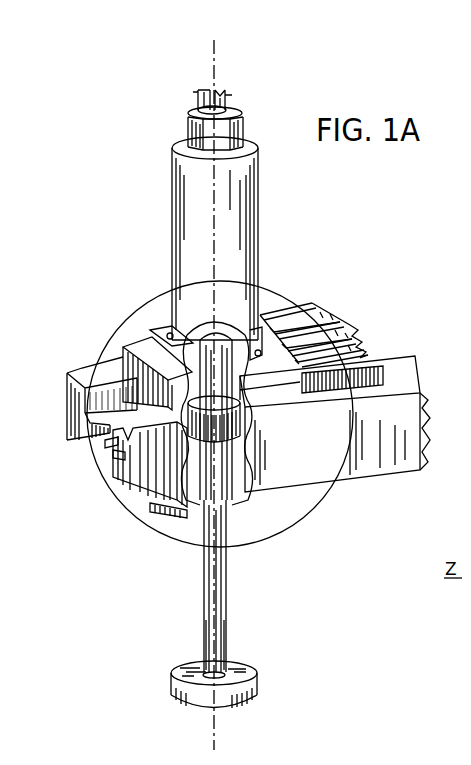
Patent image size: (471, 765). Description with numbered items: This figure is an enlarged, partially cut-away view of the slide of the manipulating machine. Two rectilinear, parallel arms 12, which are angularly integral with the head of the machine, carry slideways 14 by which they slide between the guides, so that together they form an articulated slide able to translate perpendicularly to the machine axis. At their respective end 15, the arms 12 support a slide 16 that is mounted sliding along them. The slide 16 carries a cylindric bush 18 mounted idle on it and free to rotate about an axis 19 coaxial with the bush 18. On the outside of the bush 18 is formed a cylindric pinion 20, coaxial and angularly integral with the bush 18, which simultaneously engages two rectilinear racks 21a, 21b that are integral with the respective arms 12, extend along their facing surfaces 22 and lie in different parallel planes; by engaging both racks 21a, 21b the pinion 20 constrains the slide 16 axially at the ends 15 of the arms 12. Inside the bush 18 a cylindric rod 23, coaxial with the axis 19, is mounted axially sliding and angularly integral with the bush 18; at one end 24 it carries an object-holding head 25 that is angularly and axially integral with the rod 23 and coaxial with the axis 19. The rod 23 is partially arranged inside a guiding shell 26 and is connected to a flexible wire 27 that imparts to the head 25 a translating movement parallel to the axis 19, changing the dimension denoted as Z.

The arms 12 is at (325, 316).
The slideways 14 is at (68, 393).
The end 15 is at (91, 405).
The slide 16 is at (274, 362).
The cylindric bush 18 is at (232, 490).
The axis 19 is at (214, 76).
The cylindric pinion 20 is at (240, 432).
The rectilinear rack 21a is at (108, 450).
The rectilinear rack 21b is at (115, 447).
The facing surfaces 22 is at (366, 360).
The cylindric rod 23 is at (212, 596).
The end 24 is at (219, 638).
The object-holding head 25 is at (257, 688).
The guiding shell 26 is at (248, 236).
The flexible wire 27 is at (232, 96).